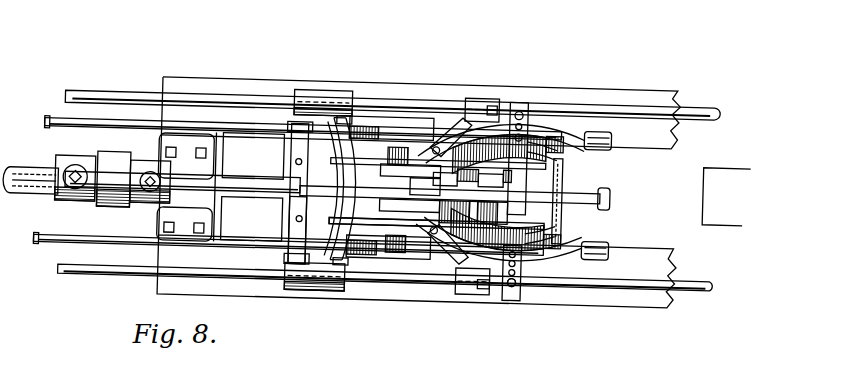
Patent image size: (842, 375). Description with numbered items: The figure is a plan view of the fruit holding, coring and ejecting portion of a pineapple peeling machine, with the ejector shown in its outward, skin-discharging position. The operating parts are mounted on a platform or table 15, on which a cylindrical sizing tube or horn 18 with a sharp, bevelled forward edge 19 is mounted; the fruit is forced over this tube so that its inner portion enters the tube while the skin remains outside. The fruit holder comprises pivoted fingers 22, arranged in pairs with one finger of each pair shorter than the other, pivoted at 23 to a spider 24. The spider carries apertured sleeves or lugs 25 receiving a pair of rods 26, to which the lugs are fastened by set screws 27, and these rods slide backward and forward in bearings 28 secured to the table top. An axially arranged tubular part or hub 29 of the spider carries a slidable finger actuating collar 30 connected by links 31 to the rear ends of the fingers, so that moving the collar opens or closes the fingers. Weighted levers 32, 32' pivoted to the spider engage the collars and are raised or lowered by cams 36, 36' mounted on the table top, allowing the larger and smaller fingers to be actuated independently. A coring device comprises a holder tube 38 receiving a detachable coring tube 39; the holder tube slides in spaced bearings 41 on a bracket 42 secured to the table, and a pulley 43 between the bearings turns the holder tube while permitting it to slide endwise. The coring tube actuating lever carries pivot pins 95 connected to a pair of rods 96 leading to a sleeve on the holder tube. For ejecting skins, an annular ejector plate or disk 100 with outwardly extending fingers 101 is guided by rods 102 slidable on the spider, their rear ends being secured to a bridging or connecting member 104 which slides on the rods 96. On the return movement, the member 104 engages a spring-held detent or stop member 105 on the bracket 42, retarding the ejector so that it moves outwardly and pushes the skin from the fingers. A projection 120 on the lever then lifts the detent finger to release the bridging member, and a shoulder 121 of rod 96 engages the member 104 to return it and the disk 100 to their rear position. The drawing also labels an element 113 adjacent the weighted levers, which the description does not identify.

The platform or table 15 is at (420, 297).
The sizing tube or horn 18 is at (726, 197).
The bevelled forward edge 19 is at (702, 178).
The pivoted fingers 22 is at (567, 189).
The pivot 23 is at (519, 108).
The spider 24 is at (512, 282).
The apertured sleeves or lugs 25 is at (472, 97).
The rods 26 is at (412, 98).
The set screws 27 is at (493, 103).
The bearings 28 is at (310, 94).
The tubular part or hub 29 is at (455, 192).
The finger actuating collar 30 is at (471, 196).
The links 31 is at (437, 145).
The weighted lever 32 is at (435, 283).
The weighted lever 32' is at (440, 106).
The cam 36 is at (360, 222).
The cam 36' is at (368, 152).
The holder tube 38 is at (253, 156).
The coring tube 39 is at (273, 191).
The bearings 41 is at (143, 173).
The bracket 42 is at (187, 186).
The pulley 43 is at (113, 179).
The pivot pins 95 is at (341, 118).
The rods 96 is at (205, 131).
The ejector plate or disk 100 is at (562, 211).
The fingers 101 is at (563, 229).
The rods 102 is at (345, 222).
The bridging or connecting member 104 is at (295, 231).
The detent or stop member 105 is at (290, 210).
The bar 113 is at (390, 193).
The projection 120 is at (299, 190).
The shoulder 121 is at (296, 147).